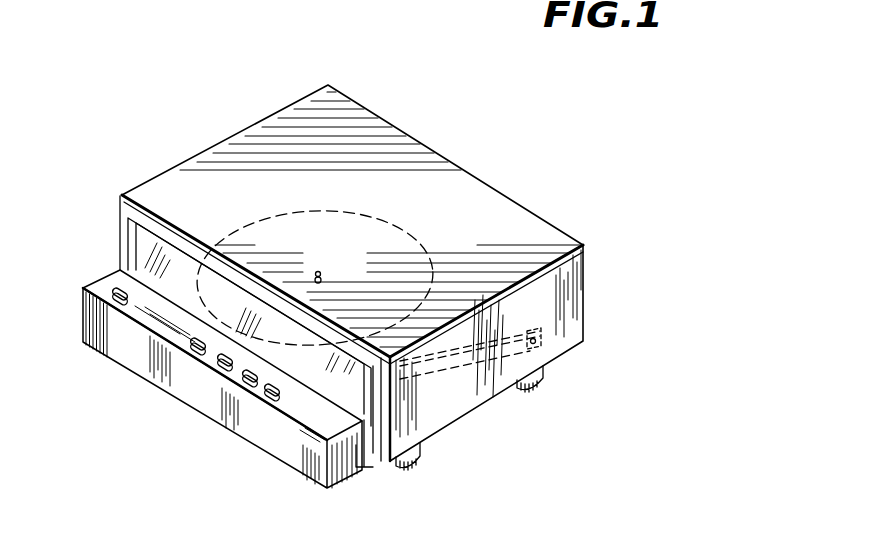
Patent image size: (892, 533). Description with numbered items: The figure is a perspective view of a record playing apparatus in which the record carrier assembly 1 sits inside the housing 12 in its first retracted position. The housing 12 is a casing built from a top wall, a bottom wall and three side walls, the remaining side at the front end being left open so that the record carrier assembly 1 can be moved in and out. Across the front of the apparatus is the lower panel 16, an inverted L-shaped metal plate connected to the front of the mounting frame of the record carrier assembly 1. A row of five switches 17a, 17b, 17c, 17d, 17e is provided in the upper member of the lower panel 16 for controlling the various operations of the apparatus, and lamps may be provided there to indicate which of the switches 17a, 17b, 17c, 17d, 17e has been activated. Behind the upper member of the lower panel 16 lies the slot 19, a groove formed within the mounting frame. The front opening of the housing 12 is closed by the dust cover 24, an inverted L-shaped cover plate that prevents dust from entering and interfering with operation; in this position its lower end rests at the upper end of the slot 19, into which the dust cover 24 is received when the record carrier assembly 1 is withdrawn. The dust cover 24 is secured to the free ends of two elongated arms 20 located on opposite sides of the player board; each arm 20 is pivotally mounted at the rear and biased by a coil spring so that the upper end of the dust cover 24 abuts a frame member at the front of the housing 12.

The record carrier assembly 1 is at (114, 253).
The housing 12 is at (210, 151).
The lower panel 16 is at (293, 455).
The switch 17a is at (116, 303).
The switch 17b is at (193, 355).
The switch 17c is at (220, 371).
The switch 17d is at (246, 386).
The switch 17e is at (271, 400).
The slot 19 is at (357, 464).
The elongated arm 20 is at (453, 370).
The dust cover 24 is at (127, 240).